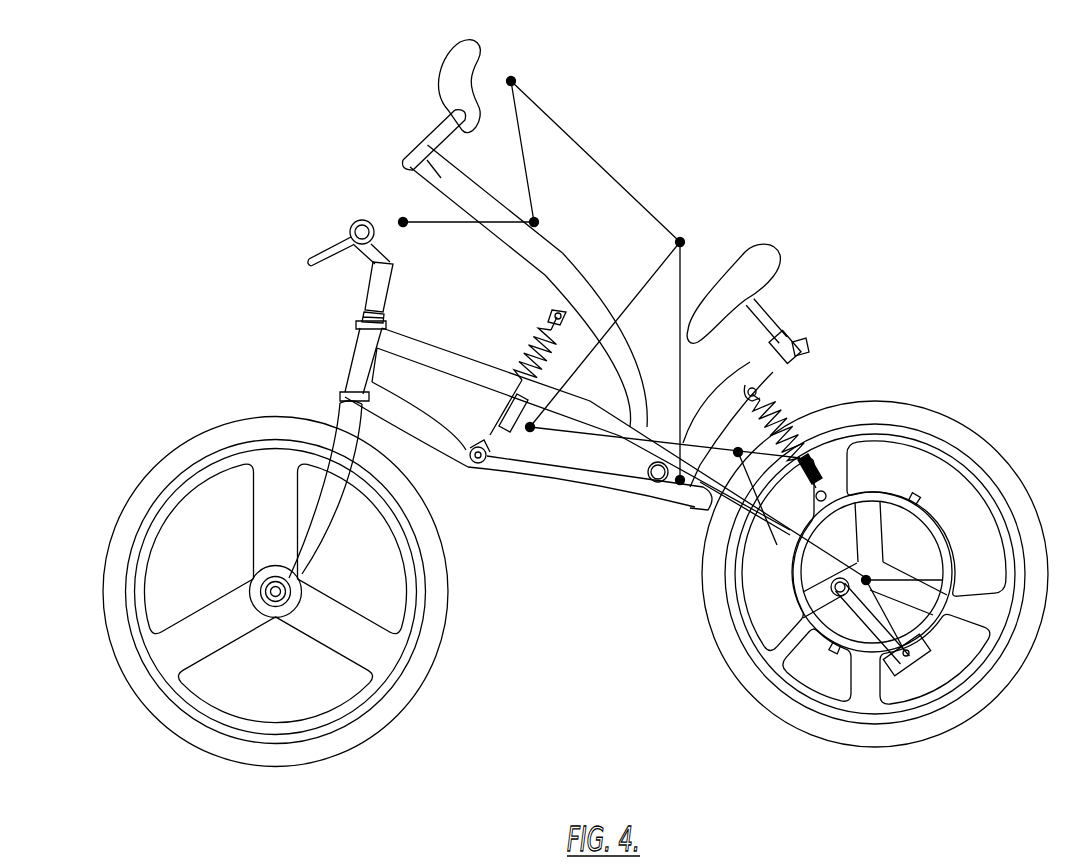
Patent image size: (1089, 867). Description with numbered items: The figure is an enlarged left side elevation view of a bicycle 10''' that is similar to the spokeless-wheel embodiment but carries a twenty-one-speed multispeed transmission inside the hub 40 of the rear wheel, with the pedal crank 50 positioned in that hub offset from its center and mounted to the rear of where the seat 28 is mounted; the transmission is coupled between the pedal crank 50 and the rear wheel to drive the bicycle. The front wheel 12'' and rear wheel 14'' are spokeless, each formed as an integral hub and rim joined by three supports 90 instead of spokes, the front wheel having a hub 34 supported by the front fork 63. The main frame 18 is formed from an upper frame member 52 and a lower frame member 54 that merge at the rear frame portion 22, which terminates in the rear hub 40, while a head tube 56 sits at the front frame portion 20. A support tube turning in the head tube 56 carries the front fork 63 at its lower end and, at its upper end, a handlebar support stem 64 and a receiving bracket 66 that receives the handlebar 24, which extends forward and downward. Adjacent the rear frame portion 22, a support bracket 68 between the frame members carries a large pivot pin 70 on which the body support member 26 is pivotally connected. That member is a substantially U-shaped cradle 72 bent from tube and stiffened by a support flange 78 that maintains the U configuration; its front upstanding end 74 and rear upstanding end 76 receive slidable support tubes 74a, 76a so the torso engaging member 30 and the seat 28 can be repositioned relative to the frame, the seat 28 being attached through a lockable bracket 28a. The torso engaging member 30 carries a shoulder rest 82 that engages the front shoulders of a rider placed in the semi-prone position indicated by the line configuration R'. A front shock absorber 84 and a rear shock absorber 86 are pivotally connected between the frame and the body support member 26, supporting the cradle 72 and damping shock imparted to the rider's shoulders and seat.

The bicycle 10''' is at (811, 132).
The spokeless front wheel 12'' is at (275, 641).
The spokeless rear wheel 14'' is at (875, 628).
The main frame 18 is at (572, 509).
The front frame portion 20 is at (314, 339).
The rear frame portion 22 is at (781, 563).
The handlebar 24 is at (340, 250).
The body support member 26 is at (547, 271).
The seat 28 is at (760, 290).
The lockable bracket 28a is at (792, 336).
The torso engaging member 30 is at (459, 93).
The hub 34 is at (300, 582).
The rear hub 40 is at (917, 537).
The pedal crank 50 is at (888, 641).
The upper frame member 52 is at (441, 354).
The lower frame member 54 is at (441, 431).
The head tube 56 is at (356, 358).
The front fork 63 is at (345, 417).
The handlebar support stem 64 is at (382, 291).
The receiving bracket 66 is at (376, 235).
The support bracket 68 is at (627, 462).
The pivot pin 70 is at (658, 484).
The U-shaped cradle 72 is at (645, 330).
The front upstanding end 74 is at (486, 215).
The slidable support tube 74a is at (437, 167).
The rear upstanding end 76 is at (755, 378).
The slidable support tube 76a is at (775, 357).
The support flange 78 is at (642, 395).
The shoulder rest 82 is at (466, 57).
The front shock absorber 84 is at (523, 372).
The rear shock absorber 86 is at (808, 402).
The supports 90 is at (231, 623).
The line configuration of rider R' is at (542, 162).